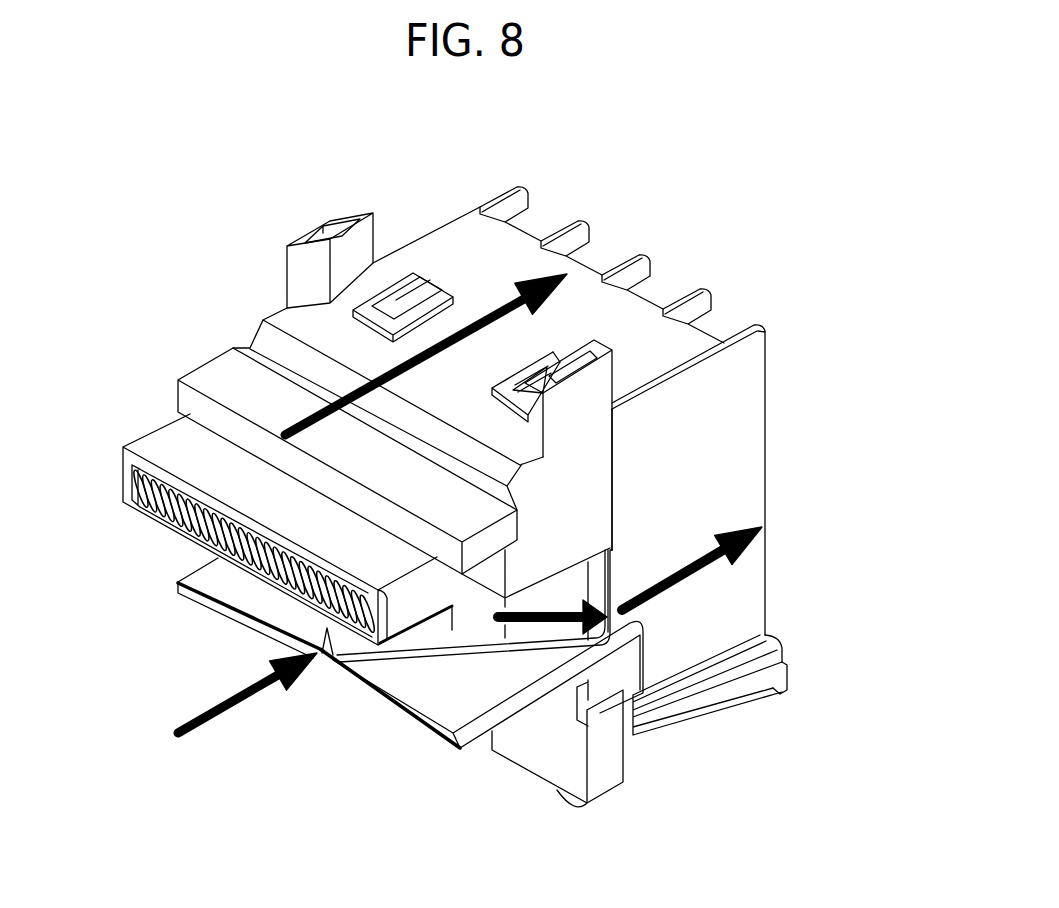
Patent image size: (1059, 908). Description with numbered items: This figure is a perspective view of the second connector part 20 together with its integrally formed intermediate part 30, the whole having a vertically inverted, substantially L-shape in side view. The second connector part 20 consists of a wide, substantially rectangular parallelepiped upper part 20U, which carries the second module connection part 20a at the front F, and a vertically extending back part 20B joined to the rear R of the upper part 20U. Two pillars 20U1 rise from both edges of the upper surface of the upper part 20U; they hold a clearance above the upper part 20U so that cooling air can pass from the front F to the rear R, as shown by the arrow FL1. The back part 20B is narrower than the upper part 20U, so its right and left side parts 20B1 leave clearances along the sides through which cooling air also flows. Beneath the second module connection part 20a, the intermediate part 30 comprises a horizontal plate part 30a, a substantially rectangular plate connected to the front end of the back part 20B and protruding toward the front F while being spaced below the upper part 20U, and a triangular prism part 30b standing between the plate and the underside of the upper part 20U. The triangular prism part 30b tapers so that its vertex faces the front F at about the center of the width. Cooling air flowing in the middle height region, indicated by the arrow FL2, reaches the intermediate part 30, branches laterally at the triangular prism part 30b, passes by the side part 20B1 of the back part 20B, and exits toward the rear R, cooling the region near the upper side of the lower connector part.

The second connector part 20 is at (461, 396).
The upper part 20U is at (210, 342).
The pillars 20U1 is at (307, 236).
The back part 20B is at (594, 493).
The side part 20B1 is at (735, 507).
The second module connection part 20a is at (172, 528).
The intermediate part 30 is at (482, 686).
The horizontal plate part 30a is at (447, 742).
The triangular prism part 30b is at (487, 630).
The arrow FL1 is at (483, 313).
The arrow FL2 is at (207, 708).
The rear R is at (842, 396).
The front F is at (133, 687).